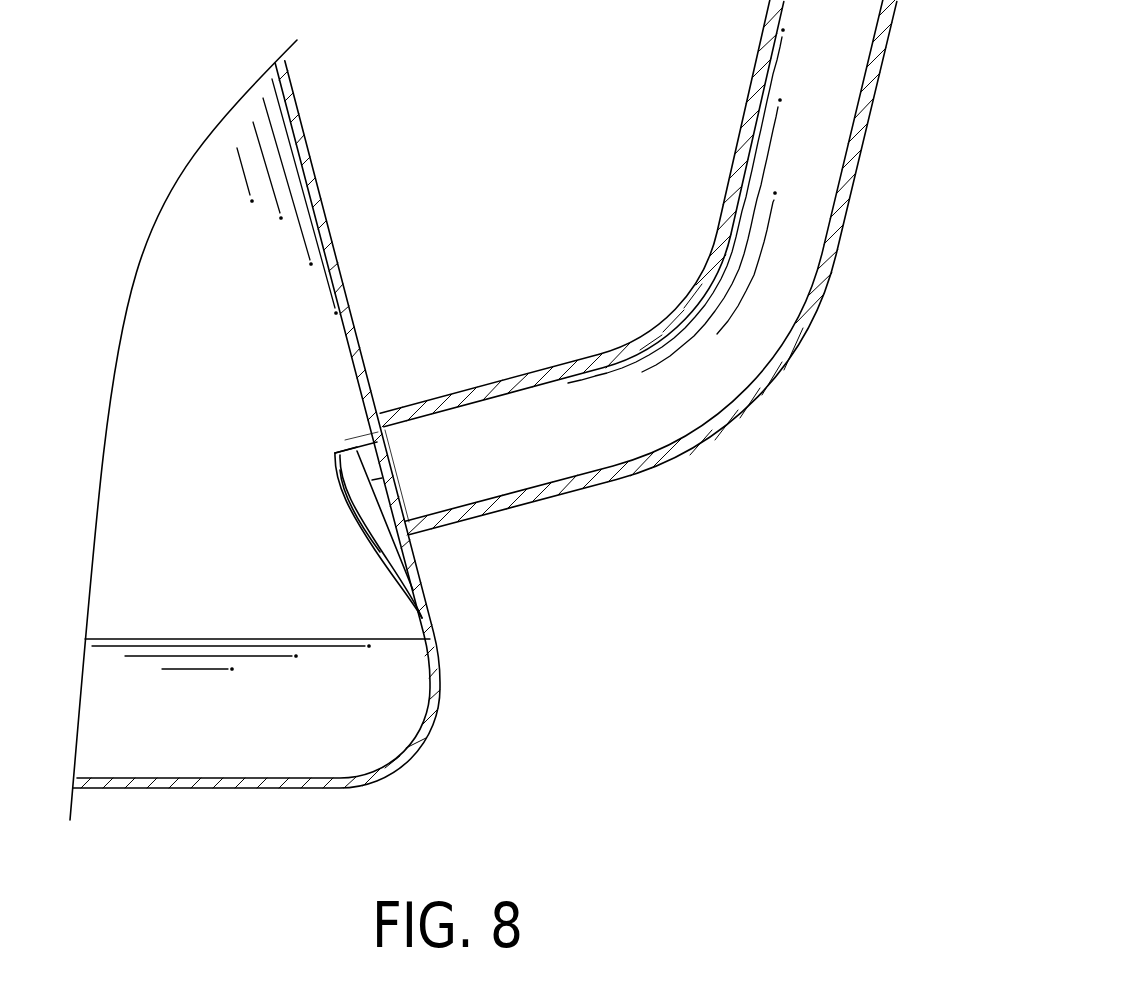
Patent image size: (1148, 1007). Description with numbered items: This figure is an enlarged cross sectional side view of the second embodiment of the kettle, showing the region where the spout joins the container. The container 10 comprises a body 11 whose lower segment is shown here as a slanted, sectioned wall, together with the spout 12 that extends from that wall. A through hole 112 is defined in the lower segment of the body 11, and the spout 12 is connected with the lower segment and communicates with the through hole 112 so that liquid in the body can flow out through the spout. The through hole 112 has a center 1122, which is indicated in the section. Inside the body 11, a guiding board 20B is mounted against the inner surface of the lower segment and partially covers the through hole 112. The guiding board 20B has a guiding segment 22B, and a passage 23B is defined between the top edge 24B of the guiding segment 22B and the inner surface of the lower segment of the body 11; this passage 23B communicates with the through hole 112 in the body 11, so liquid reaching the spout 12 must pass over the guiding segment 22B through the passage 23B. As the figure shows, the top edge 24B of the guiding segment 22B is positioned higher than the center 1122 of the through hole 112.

The container 10 is at (321, 104).
The body 11 is at (316, 188).
The spout 12 is at (650, 462).
The through hole 112 is at (400, 488).
The center of the through hole 1122 is at (401, 470).
The guiding board 20B is at (329, 516).
The guiding segment 22B is at (363, 545).
The passage 23B is at (351, 430).
The top edge of the guiding segment 24B is at (334, 452).